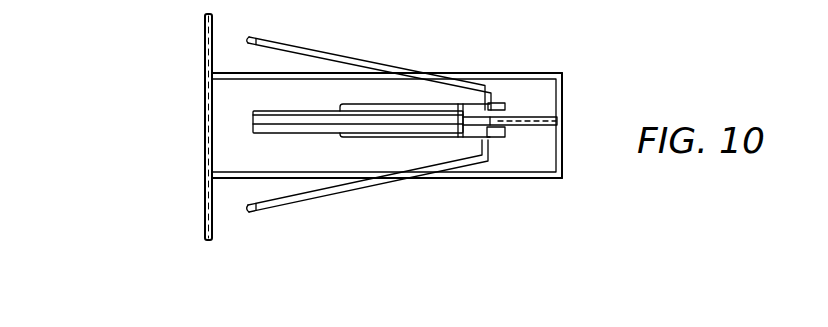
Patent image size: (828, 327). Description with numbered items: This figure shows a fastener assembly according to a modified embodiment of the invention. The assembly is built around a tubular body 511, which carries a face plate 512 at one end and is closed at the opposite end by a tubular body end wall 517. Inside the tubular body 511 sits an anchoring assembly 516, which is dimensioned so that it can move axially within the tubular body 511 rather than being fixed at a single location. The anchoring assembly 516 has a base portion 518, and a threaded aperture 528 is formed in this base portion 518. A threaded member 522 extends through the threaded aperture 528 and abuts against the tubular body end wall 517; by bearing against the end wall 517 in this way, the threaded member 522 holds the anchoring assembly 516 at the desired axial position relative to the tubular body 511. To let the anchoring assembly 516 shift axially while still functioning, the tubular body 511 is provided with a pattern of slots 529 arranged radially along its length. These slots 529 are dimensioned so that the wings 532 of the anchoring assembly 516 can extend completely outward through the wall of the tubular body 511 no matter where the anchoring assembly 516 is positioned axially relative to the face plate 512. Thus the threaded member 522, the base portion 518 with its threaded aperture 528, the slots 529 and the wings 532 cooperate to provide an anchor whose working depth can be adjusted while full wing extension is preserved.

The tubular body 511 is at (503, 70).
The face plate 512 is at (205, 57).
The anchoring assembly 516 is at (497, 99).
The tubular body end wall 517 is at (562, 158).
The base portion 518 is at (497, 141).
The threaded member 522 is at (528, 127).
The threaded aperture 528 is at (492, 118).
The slots 529 is at (352, 138).
The wings 532 is at (317, 116).